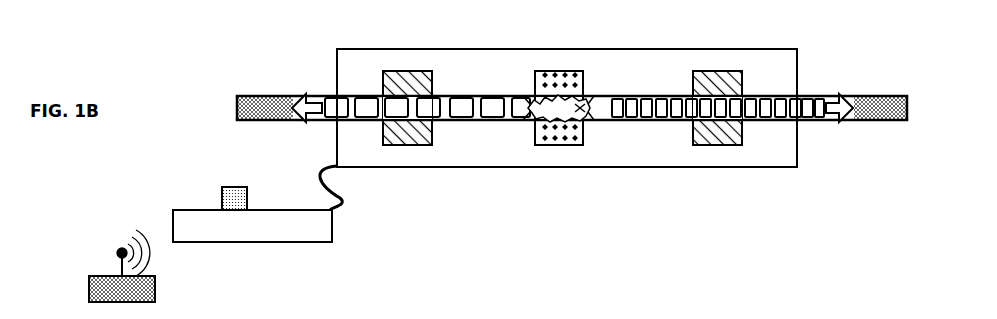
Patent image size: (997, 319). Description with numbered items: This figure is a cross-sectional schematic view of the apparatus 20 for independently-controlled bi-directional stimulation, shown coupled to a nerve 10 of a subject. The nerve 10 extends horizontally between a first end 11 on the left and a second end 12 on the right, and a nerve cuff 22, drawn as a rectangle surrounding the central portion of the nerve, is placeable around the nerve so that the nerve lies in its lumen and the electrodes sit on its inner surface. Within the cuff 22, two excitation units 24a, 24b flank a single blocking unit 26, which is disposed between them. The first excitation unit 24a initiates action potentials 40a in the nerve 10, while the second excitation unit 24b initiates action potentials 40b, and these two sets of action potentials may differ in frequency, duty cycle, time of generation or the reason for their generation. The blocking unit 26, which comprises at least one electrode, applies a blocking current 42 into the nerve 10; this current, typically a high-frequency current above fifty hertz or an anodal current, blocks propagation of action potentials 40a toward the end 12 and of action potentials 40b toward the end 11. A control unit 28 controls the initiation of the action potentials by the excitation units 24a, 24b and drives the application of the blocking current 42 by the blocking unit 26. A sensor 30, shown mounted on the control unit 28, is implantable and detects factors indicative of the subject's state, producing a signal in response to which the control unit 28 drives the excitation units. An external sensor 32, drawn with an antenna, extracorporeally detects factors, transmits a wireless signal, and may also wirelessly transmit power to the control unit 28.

The nerve 10 is at (263, 96).
The end of nerve 11 is at (237, 105).
The end of nerve 12 is at (907, 108).
The apparatus 20 is at (797, 183).
The nerve cuff 22 is at (797, 150).
The excitation unit 24a is at (410, 147).
The excitation unit 24b is at (728, 147).
The blocking unit 26 is at (553, 146).
The control unit 28 is at (306, 243).
The sensor 30 is at (222, 192).
The external sensor 32 is at (89, 280).
The action potentials 40a is at (372, 98).
The action potentials 40b is at (668, 98).
The blocking current 42 is at (588, 100).